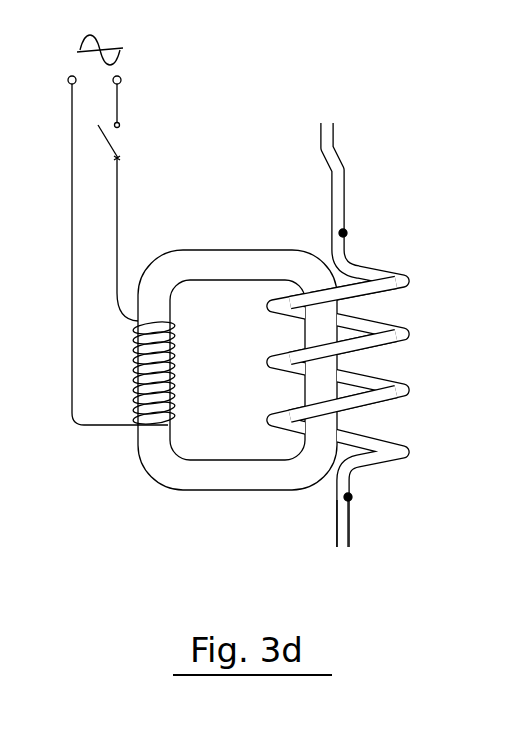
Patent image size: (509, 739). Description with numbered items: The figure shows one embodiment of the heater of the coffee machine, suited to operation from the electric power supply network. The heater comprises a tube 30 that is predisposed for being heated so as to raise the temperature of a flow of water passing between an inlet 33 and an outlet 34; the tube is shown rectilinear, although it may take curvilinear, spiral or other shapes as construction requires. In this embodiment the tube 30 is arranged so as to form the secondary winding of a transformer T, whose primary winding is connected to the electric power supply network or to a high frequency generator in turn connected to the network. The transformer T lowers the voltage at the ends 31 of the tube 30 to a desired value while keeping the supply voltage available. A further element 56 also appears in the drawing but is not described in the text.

The transformer T is at (302, 344).
The tube 30 is at (293, 354).
The ends of the tube 31 is at (343, 233).
The inlet 33 is at (340, 178).
The outlet 34 is at (343, 535).
The switch 56 is at (115, 148).